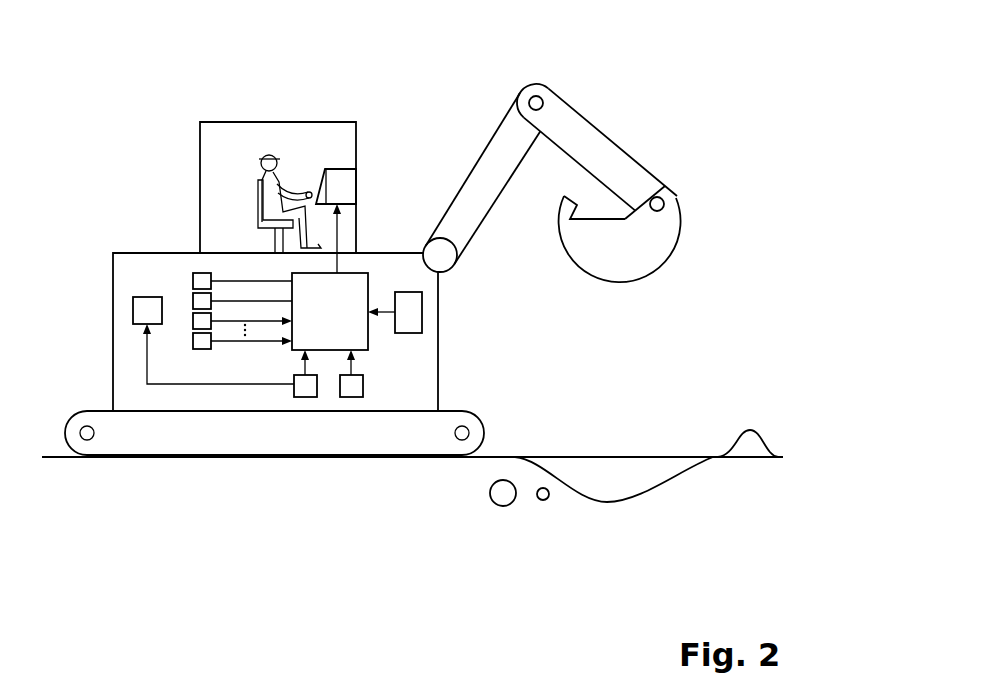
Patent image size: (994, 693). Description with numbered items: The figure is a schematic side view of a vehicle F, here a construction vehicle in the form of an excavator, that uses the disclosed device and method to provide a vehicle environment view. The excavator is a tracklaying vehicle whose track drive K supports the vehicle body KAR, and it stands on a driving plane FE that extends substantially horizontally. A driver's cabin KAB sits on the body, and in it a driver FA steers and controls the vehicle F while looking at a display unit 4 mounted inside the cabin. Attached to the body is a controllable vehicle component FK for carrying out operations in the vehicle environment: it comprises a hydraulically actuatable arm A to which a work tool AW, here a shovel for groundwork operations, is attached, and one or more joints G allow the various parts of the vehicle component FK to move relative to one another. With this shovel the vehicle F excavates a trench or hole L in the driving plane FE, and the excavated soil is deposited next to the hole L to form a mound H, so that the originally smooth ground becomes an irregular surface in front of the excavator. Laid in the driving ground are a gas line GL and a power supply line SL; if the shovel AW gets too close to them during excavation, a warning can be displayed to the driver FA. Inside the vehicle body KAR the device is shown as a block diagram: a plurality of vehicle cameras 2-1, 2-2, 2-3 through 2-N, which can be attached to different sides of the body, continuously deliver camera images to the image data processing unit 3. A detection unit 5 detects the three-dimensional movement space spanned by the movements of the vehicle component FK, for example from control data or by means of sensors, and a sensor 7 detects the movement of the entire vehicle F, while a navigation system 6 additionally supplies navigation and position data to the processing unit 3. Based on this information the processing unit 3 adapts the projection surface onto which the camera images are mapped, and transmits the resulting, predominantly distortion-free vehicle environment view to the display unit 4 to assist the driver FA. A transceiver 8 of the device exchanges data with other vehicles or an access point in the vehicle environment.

The vehicle F is at (380, 80).
The driver FA is at (266, 153).
The driver's cabin KAB is at (200, 153).
The vehicle body KAR is at (113, 345).
The track drive K is at (213, 458).
The hydraulically actuatable arm A is at (481, 157).
The vehicle component FK is at (641, 112).
The joint G is at (543, 100).
The work tool AW is at (670, 252).
The vehicle camera 2-1 is at (195, 273).
The vehicle camera 2-2 is at (193, 300).
The vehicle camera 2-3 is at (193, 320).
The vehicle camera 2-N is at (211, 345).
The image data processing unit 3 is at (368, 335).
The display unit 4 is at (347, 182).
The detection unit 5 is at (422, 310).
The navigation system 6 is at (302, 397).
The sensor 7 is at (348, 397).
The transceiver 8 is at (132, 312).
The driving plane FE is at (502, 458).
The hole L is at (610, 503).
The mound H is at (747, 460).
The gas line GL is at (503, 506).
The power supply line SL is at (543, 500).